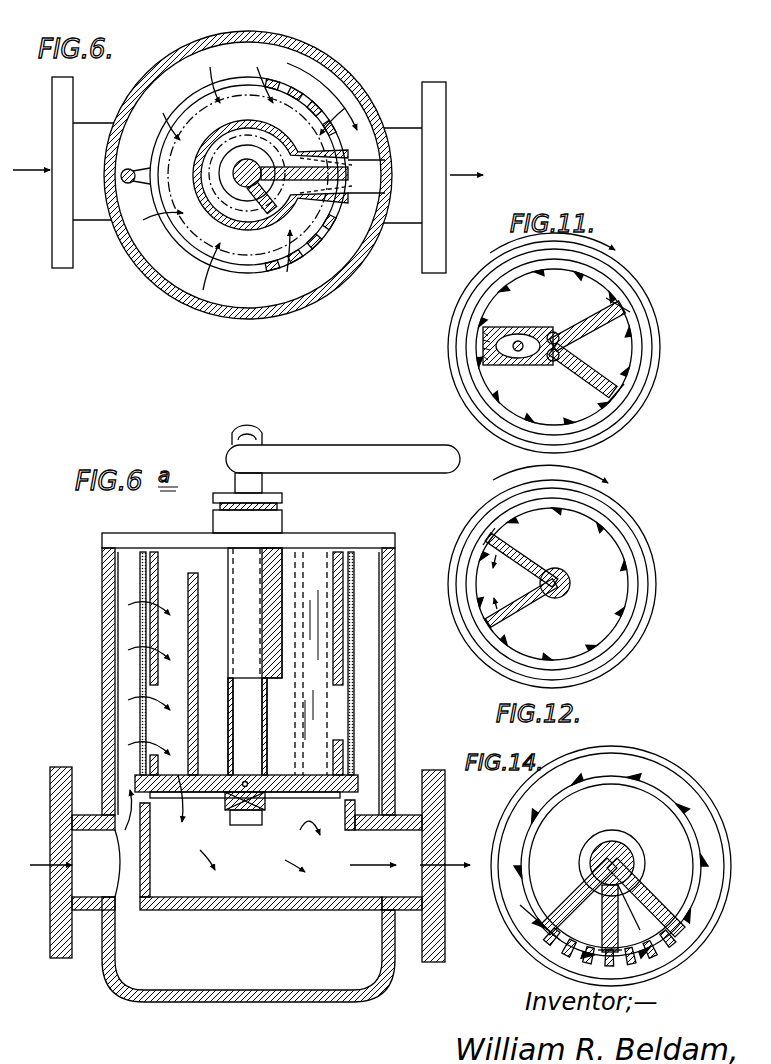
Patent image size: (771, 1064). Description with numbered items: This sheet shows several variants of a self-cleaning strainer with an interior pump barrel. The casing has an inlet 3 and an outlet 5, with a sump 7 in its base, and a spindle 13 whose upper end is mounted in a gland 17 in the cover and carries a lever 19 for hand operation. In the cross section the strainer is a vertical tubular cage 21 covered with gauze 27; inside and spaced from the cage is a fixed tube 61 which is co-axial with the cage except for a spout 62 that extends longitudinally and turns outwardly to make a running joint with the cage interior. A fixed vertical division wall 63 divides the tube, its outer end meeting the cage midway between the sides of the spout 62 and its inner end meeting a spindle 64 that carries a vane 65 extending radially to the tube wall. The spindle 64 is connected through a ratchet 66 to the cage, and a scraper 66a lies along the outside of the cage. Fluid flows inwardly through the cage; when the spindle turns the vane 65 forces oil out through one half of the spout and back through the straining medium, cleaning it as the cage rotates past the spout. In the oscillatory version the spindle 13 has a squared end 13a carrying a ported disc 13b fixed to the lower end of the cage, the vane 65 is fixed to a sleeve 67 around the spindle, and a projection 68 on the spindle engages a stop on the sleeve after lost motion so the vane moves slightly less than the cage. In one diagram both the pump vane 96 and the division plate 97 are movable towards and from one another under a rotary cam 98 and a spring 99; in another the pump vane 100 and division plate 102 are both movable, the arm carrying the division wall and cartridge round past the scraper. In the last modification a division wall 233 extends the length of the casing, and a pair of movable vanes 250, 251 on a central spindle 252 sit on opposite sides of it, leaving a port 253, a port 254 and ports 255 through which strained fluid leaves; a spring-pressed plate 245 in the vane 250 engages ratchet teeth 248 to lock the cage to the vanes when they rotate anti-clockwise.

In FIG. 6, the inlet 3 is at (62, 205).
In FIG. 6A, the inlet 3 is at (50, 845).
In FIG. 6, the outlet 5 is at (438, 195).
In FIG. 6A, the outlet 5 is at (430, 845).
In FIG. 6A, the sump 7 is at (188, 939).
In FIG. 6A, the spindle 13 is at (235, 748).
In FIG. 12, the spindle 13 is at (570, 584).
In FIG. 6A, the squared end 13a is at (248, 798).
In FIG. 6A, the ported disc 13b is at (210, 795).
In FIG. 6A, the gland 17 is at (213, 502).
In FIG. 6A, the lever 19 is at (398, 462).
In FIG. 6, the tubular cage 21 is at (283, 270).
In FIG. 6A, the tubular cage 21 is at (140, 640).
In FIG. 11, the tubular cage 21 is at (515, 428).
In FIG. 12, the tubular cage 21 is at (500, 658).
In FIG. 6, the gauze 27 is at (280, 87).
In FIG. 6A, the gauze 27 is at (356, 640).
In FIG. 11, the gauze 27 is at (612, 430).
In FIG. 12, the gauze 27 is at (612, 660).
In FIG. 6, the fixed tube 61 is at (197, 175).
In FIG. 6A, the fixed tube 61 is at (192, 702).
In FIG. 6, the spout 62 is at (330, 190).
In FIG. 6, the division wall 63 is at (355, 200).
In FIG. 6A, the division wall 63 is at (325, 742).
In FIG. 6, the spindle 64 is at (247, 158).
In FIG. 6, the vane 65 is at (263, 215).
In FIG. 6A, the vane 65 is at (276, 595).
In FIG. 6, the ratchet 66 is at (225, 205).
In FIG. 6, the scraper 66a is at (128, 183).
In FIG. 6, the sleeve 67 is at (190, 118).
In FIG. 6A, the sleeve 67 is at (155, 722).
In FIG. 6A, the projection 68 is at (238, 812).
In FIG. 11, the pump vane 96 is at (580, 326).
In FIG. 11, the division plate 97 is at (578, 372).
In FIG. 11, the rotary cam 98 is at (528, 345).
In FIG. 11, the spring 99 is at (512, 338).
In FIG. 12, the pump vane 100 is at (540, 570).
In FIG. 12, the division plate 102 is at (525, 603).
In FIG. 14, the division wall 233 is at (575, 960).
In FIG. 14, the spring-pressed plate 245 is at (540, 935).
In FIG. 14, the ratchet teeth 248 is at (545, 930).
In FIG. 14, the movable vane 250 is at (578, 893).
In FIG. 14, the movable vane 251 is at (645, 888).
In FIG. 14, the spindle 252 is at (632, 852).
In FIG. 14, the port 253 is at (585, 905).
In FIG. 14, the port 254 is at (645, 905).
In FIG. 14, the ports 255 is at (692, 950).